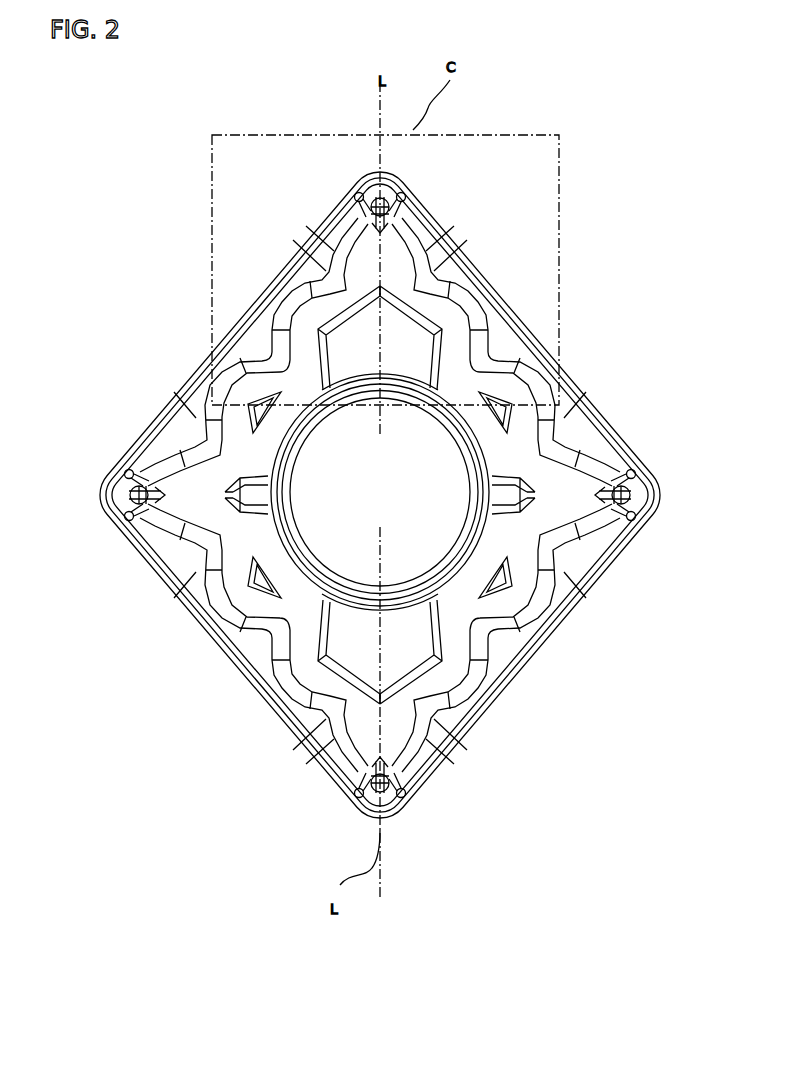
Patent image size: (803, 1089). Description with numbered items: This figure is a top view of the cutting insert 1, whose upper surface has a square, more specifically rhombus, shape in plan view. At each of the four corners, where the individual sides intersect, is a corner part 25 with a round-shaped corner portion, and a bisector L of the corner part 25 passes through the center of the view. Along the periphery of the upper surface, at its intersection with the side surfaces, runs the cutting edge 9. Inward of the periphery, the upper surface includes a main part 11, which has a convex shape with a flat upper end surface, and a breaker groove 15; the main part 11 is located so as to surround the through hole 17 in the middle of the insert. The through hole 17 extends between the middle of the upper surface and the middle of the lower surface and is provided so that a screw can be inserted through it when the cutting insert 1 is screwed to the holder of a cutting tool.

The cutting insert 1 is at (150, 202).
The cutting edge 9 is at (622, 432).
The main part 11 is at (452, 365).
The breaker groove 15 is at (255, 650).
The through hole 17 is at (472, 453).
The corner part 25 is at (382, 830).